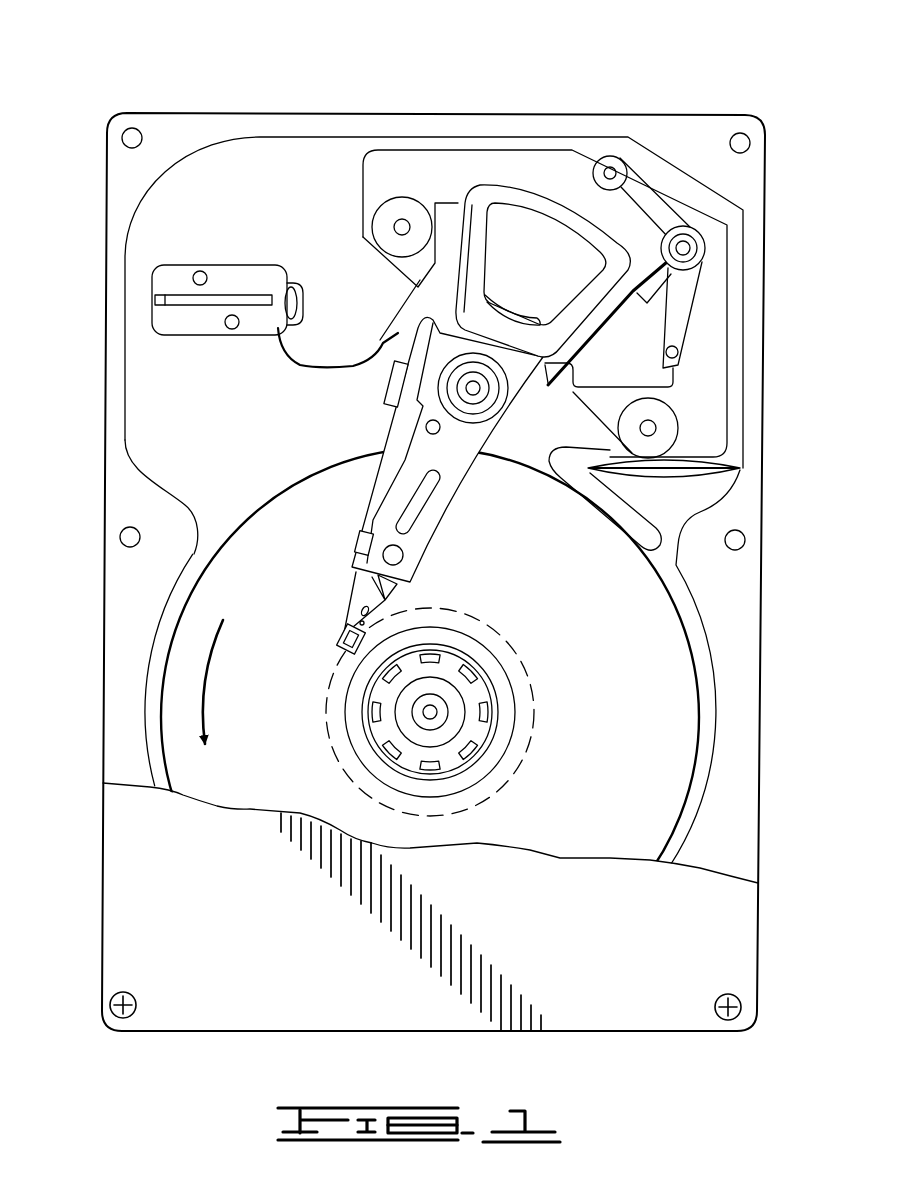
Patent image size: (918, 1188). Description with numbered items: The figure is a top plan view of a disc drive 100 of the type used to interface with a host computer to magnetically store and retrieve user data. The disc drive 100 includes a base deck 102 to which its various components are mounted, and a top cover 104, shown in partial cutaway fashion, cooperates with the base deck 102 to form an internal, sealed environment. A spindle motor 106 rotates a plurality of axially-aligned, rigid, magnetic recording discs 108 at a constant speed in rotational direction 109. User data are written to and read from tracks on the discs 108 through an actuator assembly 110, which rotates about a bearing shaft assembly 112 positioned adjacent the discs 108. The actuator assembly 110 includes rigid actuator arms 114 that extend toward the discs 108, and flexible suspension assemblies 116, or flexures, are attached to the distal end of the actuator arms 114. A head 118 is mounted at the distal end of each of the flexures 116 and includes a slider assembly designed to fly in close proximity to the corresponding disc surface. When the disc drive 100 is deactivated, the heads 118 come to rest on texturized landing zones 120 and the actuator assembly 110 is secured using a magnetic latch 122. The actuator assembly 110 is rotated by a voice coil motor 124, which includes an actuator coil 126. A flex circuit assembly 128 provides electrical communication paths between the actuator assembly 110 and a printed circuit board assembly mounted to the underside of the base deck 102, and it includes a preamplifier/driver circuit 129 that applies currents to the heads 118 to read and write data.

The disc drive 100 is at (204, 74).
The base deck 102 is at (155, 410).
The top cover 104 is at (150, 855).
The spindle motor 106 is at (470, 706).
The magnetic recording discs 108 is at (678, 720).
The rotational direction 109 is at (208, 682).
The actuator assembly 110 is at (448, 468).
The bearing shaft assembly 112 is at (480, 400).
The actuator arms 114 is at (430, 515).
The flexible suspension assemblies 116 is at (368, 602).
The head 118 is at (346, 636).
The texturized landing zones 120 is at (512, 637).
The magnetic latch 122 is at (637, 185).
The voice coil motor 124 is at (497, 158).
The actuator coil 126 is at (583, 302).
The flex circuit assembly 128 is at (326, 358).
The preamplifier/driver circuit 129 is at (392, 383).